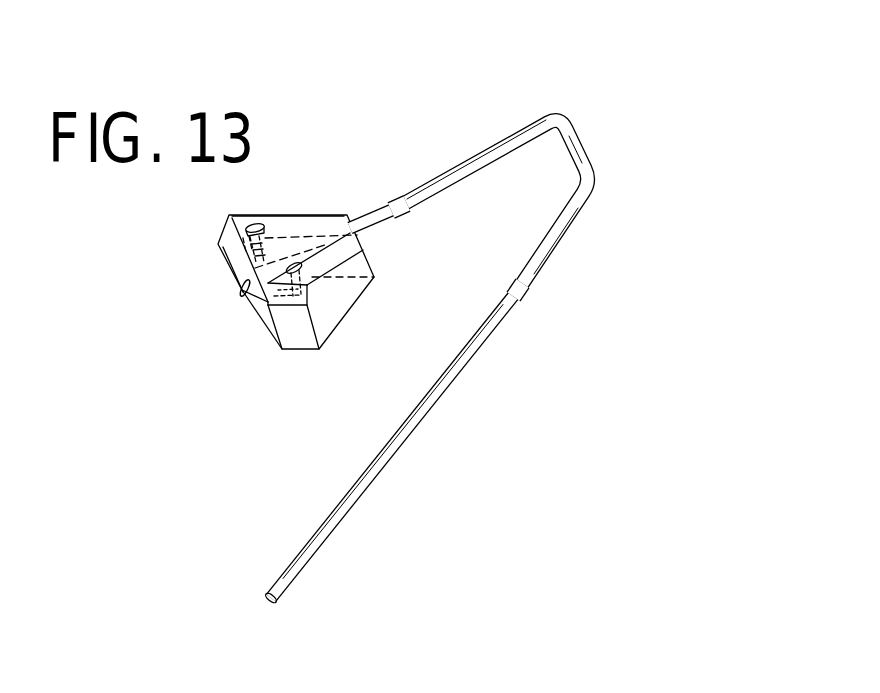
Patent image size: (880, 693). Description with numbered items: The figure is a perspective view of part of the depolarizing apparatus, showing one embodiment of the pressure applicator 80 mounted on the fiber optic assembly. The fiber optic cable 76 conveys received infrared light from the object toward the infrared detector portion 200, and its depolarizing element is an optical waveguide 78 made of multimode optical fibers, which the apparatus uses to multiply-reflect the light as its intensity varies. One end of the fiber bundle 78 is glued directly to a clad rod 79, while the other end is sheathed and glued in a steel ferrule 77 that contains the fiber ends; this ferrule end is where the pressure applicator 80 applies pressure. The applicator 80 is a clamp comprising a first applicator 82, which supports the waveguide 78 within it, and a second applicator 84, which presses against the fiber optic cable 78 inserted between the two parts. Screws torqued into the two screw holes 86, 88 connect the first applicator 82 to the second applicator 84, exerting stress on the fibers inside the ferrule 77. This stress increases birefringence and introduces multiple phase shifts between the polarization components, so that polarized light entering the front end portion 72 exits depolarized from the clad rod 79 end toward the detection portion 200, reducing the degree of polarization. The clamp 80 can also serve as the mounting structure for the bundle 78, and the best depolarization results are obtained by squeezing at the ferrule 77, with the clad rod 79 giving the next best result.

The front end portion 72 is at (215, 300).
The fiber optic cable 76 is at (621, 223).
The steel ferrule 77 is at (383, 203).
The optical waveguide 78 is at (488, 150).
The clad rod 79 is at (446, 406).
The pressure applicator 80 is at (288, 204).
The first applicator 82 is at (335, 346).
The second applicator 84 is at (312, 212).
The screw hole 86 is at (242, 218).
The screw hole 88 is at (304, 258).
The infrared detector portion 200 is at (262, 605).